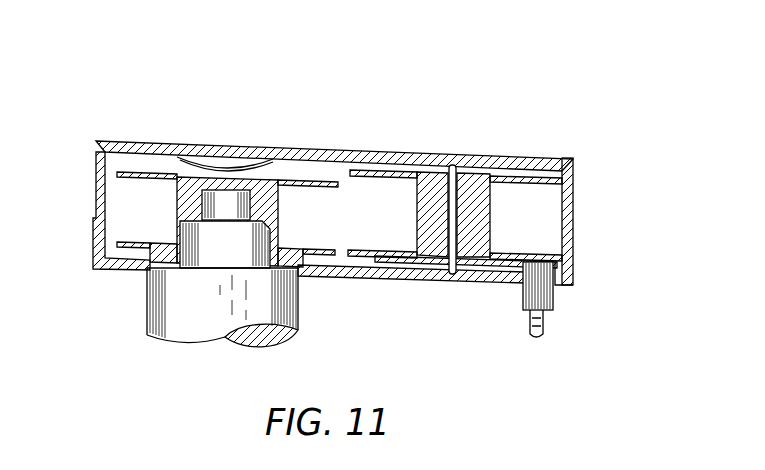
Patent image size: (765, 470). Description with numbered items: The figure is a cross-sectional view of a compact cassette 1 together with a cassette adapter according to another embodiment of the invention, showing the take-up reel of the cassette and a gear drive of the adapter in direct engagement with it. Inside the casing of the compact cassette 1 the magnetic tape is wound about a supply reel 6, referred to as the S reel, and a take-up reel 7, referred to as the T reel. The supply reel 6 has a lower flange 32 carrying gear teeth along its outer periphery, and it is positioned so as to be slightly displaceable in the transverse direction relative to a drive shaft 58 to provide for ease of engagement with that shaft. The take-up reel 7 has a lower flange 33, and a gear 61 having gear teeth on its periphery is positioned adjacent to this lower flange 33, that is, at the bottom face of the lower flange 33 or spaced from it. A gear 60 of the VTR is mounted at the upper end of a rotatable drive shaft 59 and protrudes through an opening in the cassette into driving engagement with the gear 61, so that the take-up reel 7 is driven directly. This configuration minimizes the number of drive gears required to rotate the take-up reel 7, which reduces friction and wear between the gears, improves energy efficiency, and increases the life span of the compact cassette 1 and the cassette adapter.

The compact cassette 1 is at (397, 150).
The supply reel 6 is at (175, 168).
The take-up reel 7 is at (490, 186).
The lower flange 32 is at (130, 248).
The lower flange 33 is at (537, 255).
The drive shaft 58 is at (177, 335).
The rotatable drive shaft 59 is at (543, 327).
The gear 60 is at (523, 290).
The gear 61 is at (482, 282).